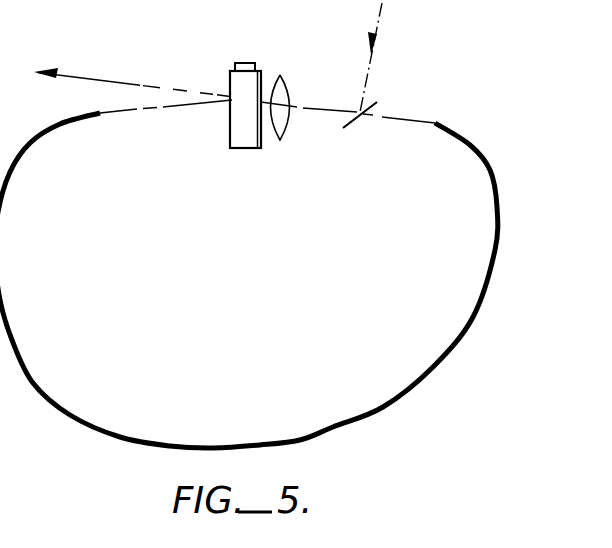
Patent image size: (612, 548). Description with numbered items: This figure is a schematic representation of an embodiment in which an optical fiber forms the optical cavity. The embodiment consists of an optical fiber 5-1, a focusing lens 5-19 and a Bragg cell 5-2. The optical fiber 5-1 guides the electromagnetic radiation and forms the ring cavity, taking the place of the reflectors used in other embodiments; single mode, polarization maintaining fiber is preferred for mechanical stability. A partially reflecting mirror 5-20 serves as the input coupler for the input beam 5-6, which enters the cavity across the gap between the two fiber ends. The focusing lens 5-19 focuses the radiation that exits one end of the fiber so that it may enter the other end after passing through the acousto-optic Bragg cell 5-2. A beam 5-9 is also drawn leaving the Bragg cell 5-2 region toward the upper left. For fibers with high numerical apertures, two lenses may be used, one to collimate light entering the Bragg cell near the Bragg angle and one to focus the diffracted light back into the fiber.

The optical fiber 5-1 is at (497, 207).
The Bragg cell 5-2 is at (230, 130).
The input beam 5-6 is at (384, 21).
The output beam 5-9 is at (107, 80).
The focusing lens 5-19 is at (285, 80).
The partially reflecting mirror 5-20 is at (360, 114).